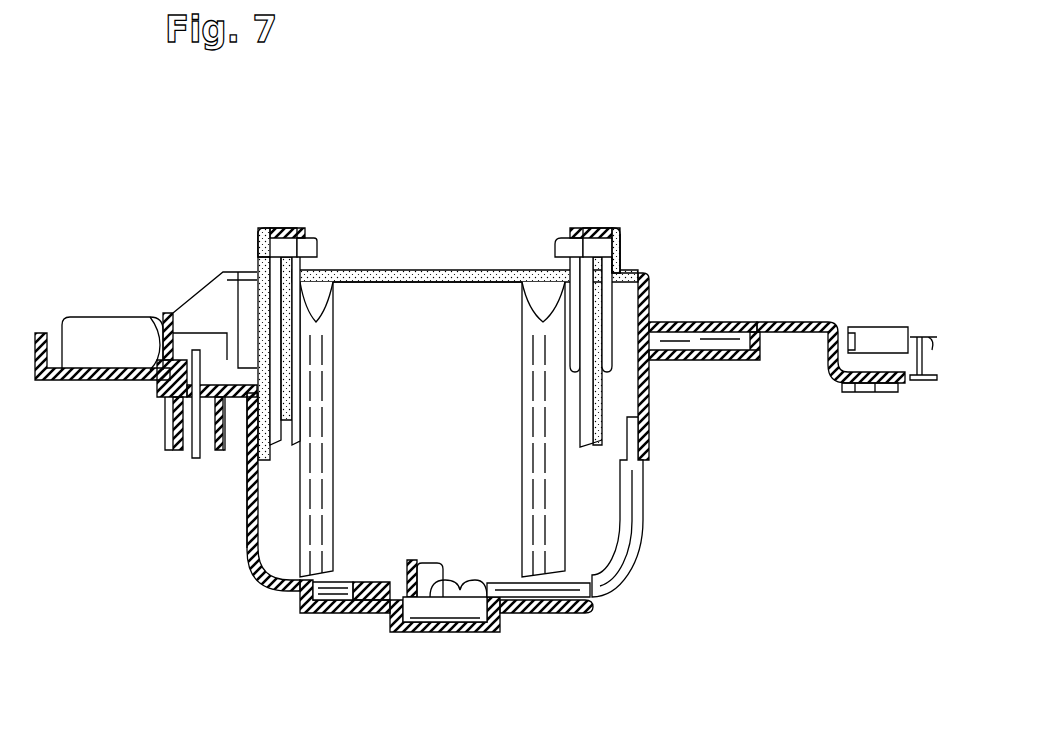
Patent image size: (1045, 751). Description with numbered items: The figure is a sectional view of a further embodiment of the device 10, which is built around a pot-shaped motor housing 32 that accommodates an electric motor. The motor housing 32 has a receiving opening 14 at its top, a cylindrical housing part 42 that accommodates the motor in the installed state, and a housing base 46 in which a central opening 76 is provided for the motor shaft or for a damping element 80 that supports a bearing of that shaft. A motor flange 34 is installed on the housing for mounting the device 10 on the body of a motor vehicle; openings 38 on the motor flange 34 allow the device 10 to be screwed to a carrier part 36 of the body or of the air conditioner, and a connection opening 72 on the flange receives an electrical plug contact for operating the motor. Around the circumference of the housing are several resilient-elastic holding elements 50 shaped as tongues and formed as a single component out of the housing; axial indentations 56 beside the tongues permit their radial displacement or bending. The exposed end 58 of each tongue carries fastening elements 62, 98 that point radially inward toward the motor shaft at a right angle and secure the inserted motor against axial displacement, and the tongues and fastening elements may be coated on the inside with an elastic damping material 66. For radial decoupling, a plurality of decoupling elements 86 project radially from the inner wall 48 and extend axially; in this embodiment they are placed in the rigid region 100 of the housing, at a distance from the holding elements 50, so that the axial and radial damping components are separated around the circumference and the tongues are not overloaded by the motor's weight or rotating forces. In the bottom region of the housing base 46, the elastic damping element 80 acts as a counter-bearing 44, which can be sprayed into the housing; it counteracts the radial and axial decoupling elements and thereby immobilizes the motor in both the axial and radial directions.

The device 10 is at (230, 592).
The receiving opening 14 is at (458, 238).
The motor housing 32 is at (248, 503).
The motor flange 34 is at (795, 320).
The carrier part 36 is at (888, 388).
The openings 38 is at (868, 376).
The cylindrical housing part 42 is at (228, 484).
The counter-bearing 44 is at (492, 620).
The housing base 46 is at (557, 615).
The inner wall 48 is at (600, 488).
The resilient-elastic holding elements 50 is at (267, 303).
The axial indentations 56 is at (572, 315).
The exposed end 58 is at (613, 248).
The fastening elements 62 is at (278, 247).
The elastic damping material 66 is at (587, 427).
The connection opening 72 is at (187, 425).
The central opening 76 is at (439, 650).
The damping element 80 is at (381, 612).
The decoupling elements 86 is at (310, 565).
The fastening elements 98 is at (416, 181).
The rigid region 100 is at (364, 300).